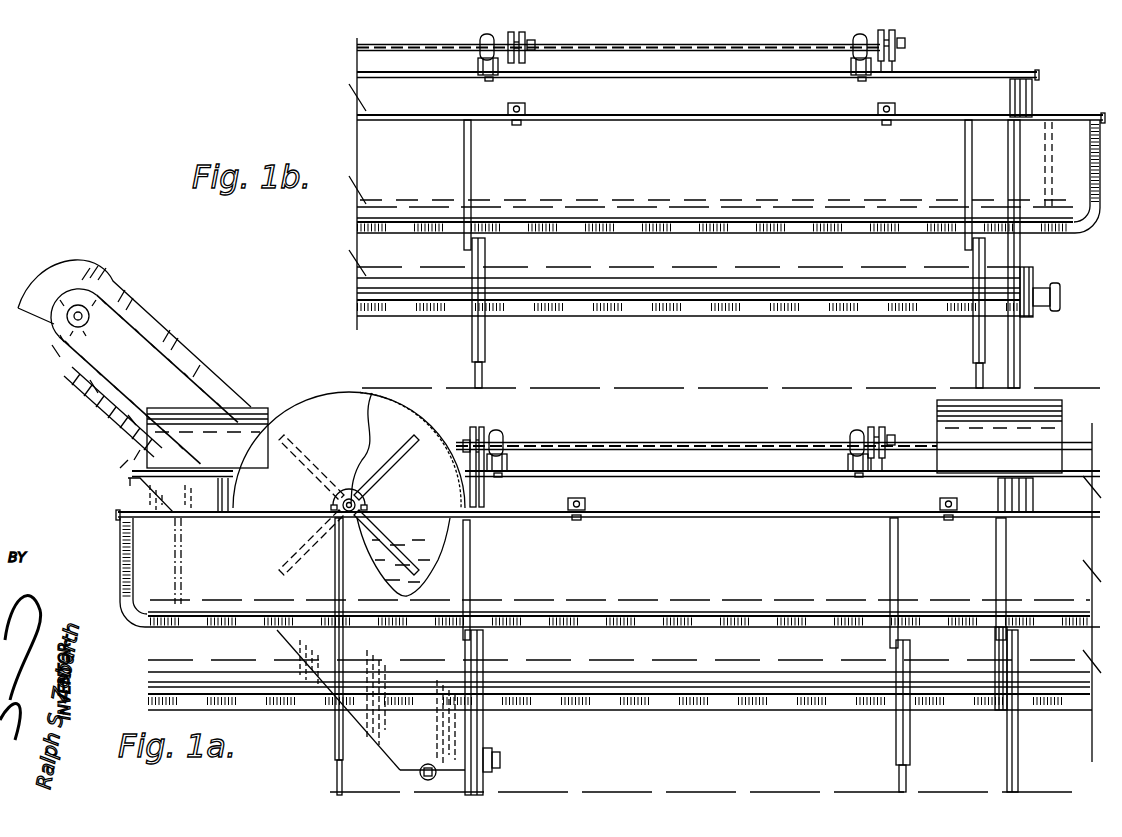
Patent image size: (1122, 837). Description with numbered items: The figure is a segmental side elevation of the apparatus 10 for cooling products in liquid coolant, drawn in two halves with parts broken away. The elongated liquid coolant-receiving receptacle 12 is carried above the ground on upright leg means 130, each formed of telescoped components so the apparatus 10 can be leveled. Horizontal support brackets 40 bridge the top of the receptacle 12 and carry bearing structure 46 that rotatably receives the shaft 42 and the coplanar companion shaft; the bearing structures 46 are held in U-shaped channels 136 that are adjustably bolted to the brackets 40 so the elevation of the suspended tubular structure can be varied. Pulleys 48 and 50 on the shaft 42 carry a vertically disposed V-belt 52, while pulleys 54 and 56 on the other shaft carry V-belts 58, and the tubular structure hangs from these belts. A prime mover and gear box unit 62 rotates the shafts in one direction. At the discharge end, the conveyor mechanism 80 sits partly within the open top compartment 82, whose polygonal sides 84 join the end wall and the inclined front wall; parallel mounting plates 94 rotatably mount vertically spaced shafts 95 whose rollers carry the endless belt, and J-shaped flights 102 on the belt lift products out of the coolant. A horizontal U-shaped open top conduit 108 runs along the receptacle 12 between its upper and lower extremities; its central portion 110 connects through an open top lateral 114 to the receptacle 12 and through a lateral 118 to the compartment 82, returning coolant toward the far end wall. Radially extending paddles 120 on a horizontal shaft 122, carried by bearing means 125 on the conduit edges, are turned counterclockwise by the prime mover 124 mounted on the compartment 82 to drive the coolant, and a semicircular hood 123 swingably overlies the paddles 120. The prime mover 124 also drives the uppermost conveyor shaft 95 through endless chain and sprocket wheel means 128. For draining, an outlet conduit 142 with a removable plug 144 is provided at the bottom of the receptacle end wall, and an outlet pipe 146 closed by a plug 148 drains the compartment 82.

In FIG. 1B, the apparatus 10 is at (347, 206).
In FIG. 1A, the apparatus 10 is at (118, 552).
In FIG. 1B, the liquid coolant-receiving receptacle 12 is at (659, 330).
In FIG. 1A, the liquid coolant-receiving receptacle 12 is at (664, 724).
In FIG. 1B, the support brackets 40 is at (492, 79).
In FIG. 1A, the support brackets 40 is at (500, 476).
In FIG. 1A, the shaft 42 is at (674, 439).
In FIG. 1B, the bearing structure 46 is at (486, 39).
In FIG. 1A, the bearing structure 46 is at (506, 438).
In FIG. 1A, the pulley 48 is at (485, 433).
In FIG. 1A, the pulley 50 is at (878, 432).
In FIG. 1A, the V-belt 52 is at (462, 452).
In FIG. 1B, the pulley 54 is at (528, 38).
In FIG. 1B, the pulley 56 is at (894, 36).
In FIG. 1B, the V-belt 58 is at (520, 71).
In FIG. 1A, the prime mover and gear box unit 62 is at (1055, 421).
In FIG. 1A, the conveyor mechanism 80 is at (125, 353).
In FIG. 1A, the open top compartment 82 is at (302, 671).
In FIG. 1A, the polygonal sides 84 is at (385, 735).
In FIG. 1A, the mounting plates 94 is at (97, 262).
In FIG. 1A, the shafts 95 is at (72, 320).
In FIG. 1A, the J-shaped flights 102 is at (102, 396).
In FIG. 1B, the open top conduit 108 is at (610, 106).
In FIG. 1A, the open top conduit 108 is at (701, 504).
In FIG. 1B, the central portion 110 is at (728, 176).
In FIG. 1A, the central portion 110 is at (780, 554).
In FIG. 1B, the open top lateral 114 is at (1046, 162).
In FIG. 1A, the lateral 118 is at (180, 548).
In FIG. 1A, the paddles 120 is at (355, 505).
In FIG. 1A, the horizontal shaft 122 is at (366, 502).
In FIG. 1A, the semicircular hood 123 is at (430, 426).
In FIG. 1A, the prime mover 124 is at (246, 420).
In FIG. 1A, the bearing means 125 is at (349, 470).
In FIG. 1A, the endless chain and sprocket wheel means 128 is at (187, 361).
In FIG. 1B, the leg means 130 is at (495, 346).
In FIG. 1A, the leg means 130 is at (889, 741).
In FIG. 1B, the U-shaped channels 136 is at (479, 65).
In FIG. 1A, the U-shaped channels 136 is at (509, 465).
In FIG. 1B, the outlet conduit 142 is at (1040, 308).
In FIG. 1B, the removable plug 144 is at (1060, 296).
In FIG. 1A, the outlet pipe 146 is at (471, 775).
In FIG. 1A, the plug 148 is at (500, 761).